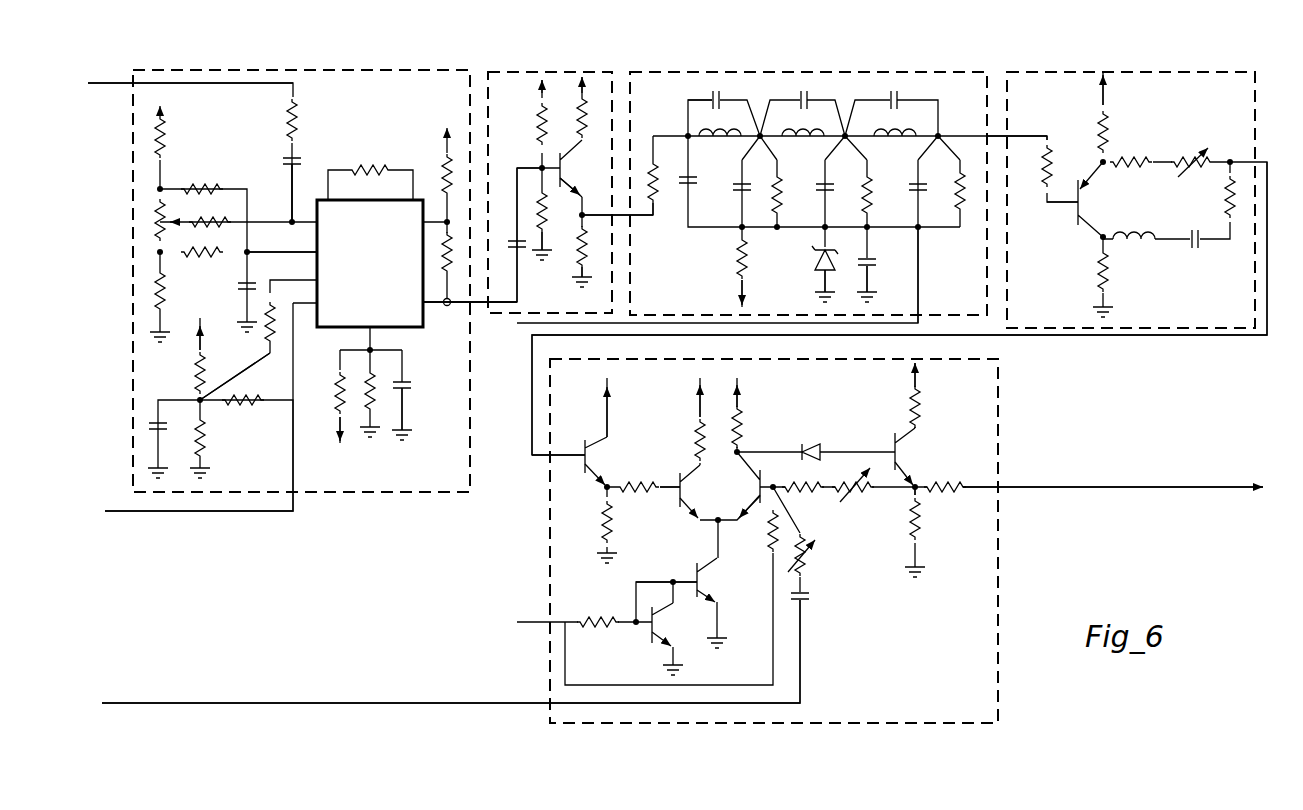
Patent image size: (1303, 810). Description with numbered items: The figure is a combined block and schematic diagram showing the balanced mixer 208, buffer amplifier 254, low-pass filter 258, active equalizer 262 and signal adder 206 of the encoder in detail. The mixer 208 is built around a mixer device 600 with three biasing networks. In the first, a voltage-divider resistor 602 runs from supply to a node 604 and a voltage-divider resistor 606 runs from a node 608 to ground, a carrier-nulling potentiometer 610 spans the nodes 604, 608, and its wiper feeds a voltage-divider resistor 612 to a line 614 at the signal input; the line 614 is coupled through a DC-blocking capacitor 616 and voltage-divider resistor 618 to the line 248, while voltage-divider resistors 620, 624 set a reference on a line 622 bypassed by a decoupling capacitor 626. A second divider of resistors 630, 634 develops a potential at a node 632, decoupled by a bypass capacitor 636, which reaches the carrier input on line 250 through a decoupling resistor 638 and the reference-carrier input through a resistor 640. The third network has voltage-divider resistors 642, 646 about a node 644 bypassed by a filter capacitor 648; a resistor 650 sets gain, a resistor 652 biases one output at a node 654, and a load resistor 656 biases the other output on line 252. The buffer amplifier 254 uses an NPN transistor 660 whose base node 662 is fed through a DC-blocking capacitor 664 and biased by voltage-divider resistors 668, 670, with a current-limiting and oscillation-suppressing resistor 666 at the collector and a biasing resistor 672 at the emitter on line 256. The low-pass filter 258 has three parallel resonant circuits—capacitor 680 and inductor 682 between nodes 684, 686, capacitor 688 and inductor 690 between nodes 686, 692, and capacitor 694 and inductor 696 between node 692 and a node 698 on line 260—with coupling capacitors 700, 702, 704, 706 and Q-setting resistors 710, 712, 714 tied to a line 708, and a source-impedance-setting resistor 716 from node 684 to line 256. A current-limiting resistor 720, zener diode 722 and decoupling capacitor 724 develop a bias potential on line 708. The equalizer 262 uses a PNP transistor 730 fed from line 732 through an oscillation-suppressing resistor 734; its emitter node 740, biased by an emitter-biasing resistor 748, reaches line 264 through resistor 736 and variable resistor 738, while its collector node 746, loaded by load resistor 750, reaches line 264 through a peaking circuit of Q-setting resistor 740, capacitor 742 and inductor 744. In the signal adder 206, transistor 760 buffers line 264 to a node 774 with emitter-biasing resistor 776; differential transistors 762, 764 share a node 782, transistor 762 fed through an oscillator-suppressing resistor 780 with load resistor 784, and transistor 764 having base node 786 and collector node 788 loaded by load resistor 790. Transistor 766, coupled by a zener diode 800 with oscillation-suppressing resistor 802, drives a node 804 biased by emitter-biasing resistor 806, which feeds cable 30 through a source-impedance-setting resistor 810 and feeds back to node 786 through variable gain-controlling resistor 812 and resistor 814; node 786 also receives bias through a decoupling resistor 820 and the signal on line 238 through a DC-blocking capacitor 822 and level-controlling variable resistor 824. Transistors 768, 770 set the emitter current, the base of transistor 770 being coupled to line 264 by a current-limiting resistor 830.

The cable 30 is at (1151, 487).
The signal adder 206 is at (998, 378).
The balanced mixer 208 is at (385, 70).
The line 238 is at (203, 703).
The line 248 is at (96, 73).
The line 250 is at (201, 514).
The line 252 is at (478, 303).
The buffer amplifier 254 is at (548, 72).
The line 256 is at (620, 216).
The low-pass filter 258 is at (718, 72).
The line 260 is at (995, 134).
The active equalizer 262 is at (1180, 72).
The line 264 is at (1196, 335).
The mixer device 600 is at (393, 195).
The voltage-divider resistor 602 is at (163, 129).
The node 604 is at (160, 189).
The voltage-divider resistor 606 is at (160, 252).
The node 608 is at (158, 290).
The carrier-nulling potentiometer 610 is at (165, 222).
The voltage-divider resistor 612 is at (219, 218).
The line 614 is at (292, 186).
The DC-blocking capacitor 616 is at (297, 158).
The voltage-divider resistor 618 is at (296, 122).
The voltage-divider resistor 620 is at (205, 178).
The line 622 is at (305, 252).
The voltage-divider resistor 624 is at (201, 254).
The decoupling capacitor 626 is at (250, 286).
The resistor 630 is at (197, 373).
The node 632 is at (204, 402).
The resistor 634 is at (203, 438).
The bypass capacitor 636 is at (155, 426).
The decoupling resistor 638 is at (262, 388).
The resistor 640 is at (270, 330).
The voltage-divider resistor 642 is at (338, 394).
The node 644 is at (368, 350).
The voltage-divider resistor 646 is at (400, 386).
The filter capacitor 648 is at (402, 386).
The resistor 650 is at (370, 156).
The resistor 652 is at (453, 183).
The node 654 is at (444, 213).
The load resistor 656 is at (445, 306).
The NPN transistor 660 is at (562, 162).
The node 662 is at (544, 190).
The DC-blocking capacitor 664 is at (510, 302).
The current-limiting and oscillation-suppressing resistor 666 is at (541, 98).
The voltage-divider resistor 668 is at (577, 105).
The voltage-divider resistor 670 is at (519, 250).
The biasing resistor 672 is at (588, 250).
The capacitor 680 is at (712, 98).
The inductor 682 is at (736, 93).
The node 684 is at (687, 134).
The node 686 is at (719, 148).
The capacitor 688 is at (806, 98).
The inductor 690 is at (790, 124).
The node 692 is at (845, 136).
The capacitor 694 is at (900, 98).
The inductor 696 is at (921, 132).
The node 698 is at (957, 124).
The coupling capacitor 700 is at (688, 181).
The coupling capacitor 702 is at (741, 188).
The coupling capacitor 704 is at (816, 183).
The coupling capacitor 706 is at (908, 183).
The line 708 is at (926, 258).
The Q-setting resistor 710 is at (780, 198).
The Q-setting resistor 712 is at (870, 198).
The Q-setting resistor 714 is at (960, 216).
The source-impedance-setting resistor 716 is at (657, 198).
The current-limiting resistor 720 is at (738, 246).
The zener diode 722 is at (818, 257).
The decoupling capacitor 724 is at (870, 264).
The PNP transistor 730 is at (1084, 200).
The line 732 is at (1067, 203).
The oscillation-suppressing resistor 734 is at (1052, 146).
The resistor 736 is at (1150, 180).
The variable resistor 738 is at (1192, 150).
The node / Q-setting resistor 740 is at (1105, 158).
The capacitor 742 is at (1191, 255).
The inductor 744 is at (1134, 256).
The node 746 is at (1093, 239).
The emitter-biasing resistor 748 is at (1106, 114).
The load resistor 750 is at (1091, 282).
The NPN transistor 760 is at (598, 442).
The NPN transistor 762 is at (680, 482).
The NPN transistor 764 is at (688, 486).
The NPN transistor 766 is at (908, 438).
The NPN transistor 768 is at (710, 574).
The NPN transistor 770 is at (656, 619).
The node 774 is at (607, 489).
The emitter-biasing resistor 776 is at (607, 530).
The oscillator-suppressing resistor 780 is at (656, 494).
The node 782 is at (712, 526).
The load resistor 784 is at (698, 415).
The node 786 is at (761, 482).
The node 788 is at (735, 425).
The load resistor 790 is at (770, 404).
The zener coupling and biasing diode 800 is at (808, 444).
The oscillation-suppressing resistor 802 is at (923, 402).
The node 804 is at (922, 498).
The emitter-biasing resistor 806 is at (923, 528).
The source-impedance-setting resistor 810 is at (948, 484).
The variable gain-controlling resistor 812 is at (859, 492).
The resistor 814 is at (810, 478).
The decoupling resistor 820 is at (770, 540).
The DC-blocking capacitor 822 is at (810, 596).
The level-controlling variable resistor 824 is at (806, 552).
The current-limiting resistor 830 is at (594, 629).